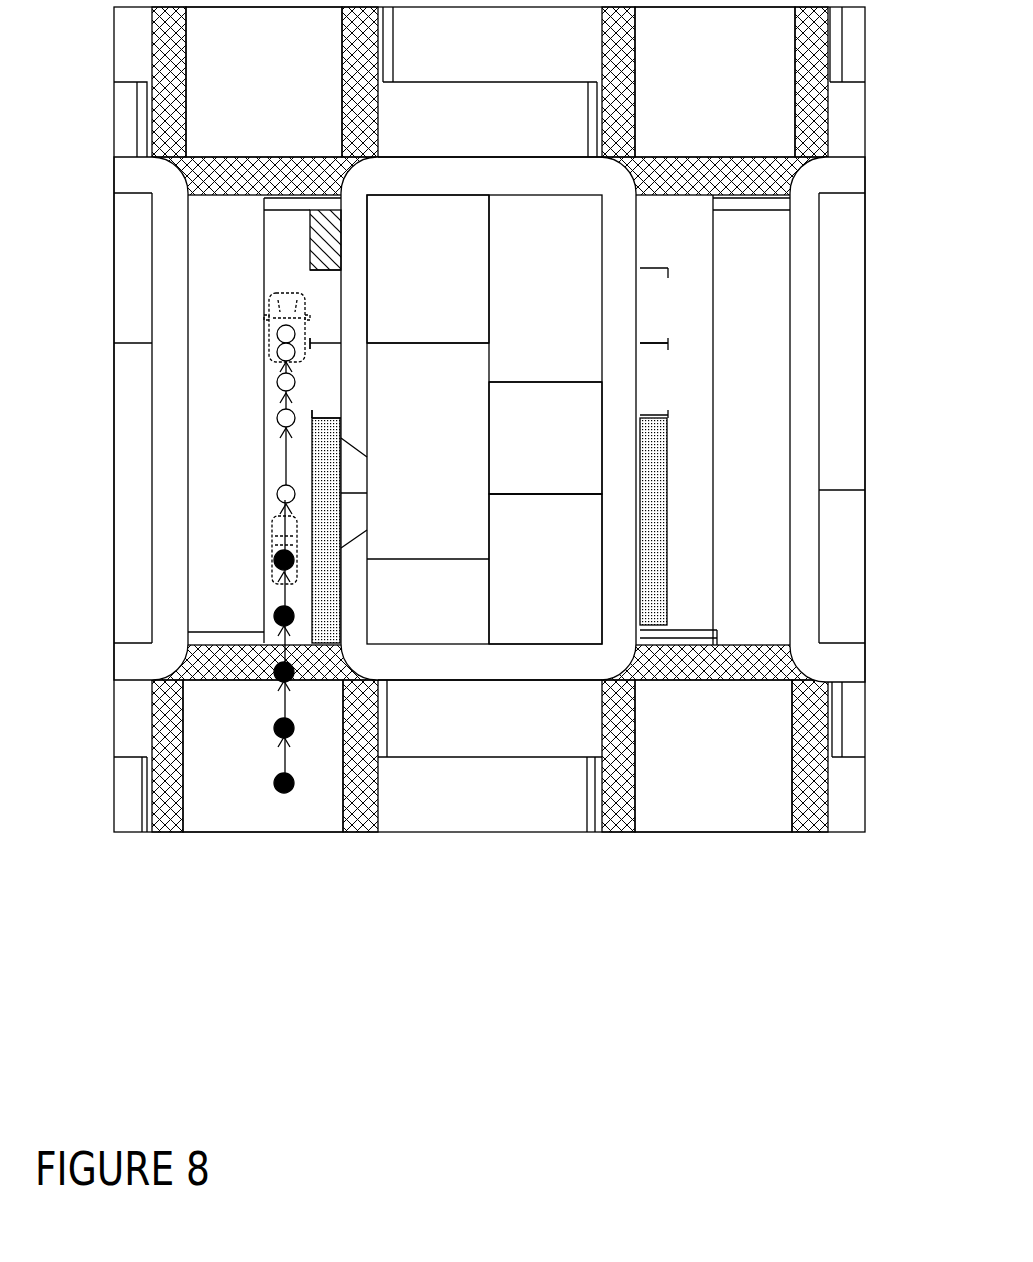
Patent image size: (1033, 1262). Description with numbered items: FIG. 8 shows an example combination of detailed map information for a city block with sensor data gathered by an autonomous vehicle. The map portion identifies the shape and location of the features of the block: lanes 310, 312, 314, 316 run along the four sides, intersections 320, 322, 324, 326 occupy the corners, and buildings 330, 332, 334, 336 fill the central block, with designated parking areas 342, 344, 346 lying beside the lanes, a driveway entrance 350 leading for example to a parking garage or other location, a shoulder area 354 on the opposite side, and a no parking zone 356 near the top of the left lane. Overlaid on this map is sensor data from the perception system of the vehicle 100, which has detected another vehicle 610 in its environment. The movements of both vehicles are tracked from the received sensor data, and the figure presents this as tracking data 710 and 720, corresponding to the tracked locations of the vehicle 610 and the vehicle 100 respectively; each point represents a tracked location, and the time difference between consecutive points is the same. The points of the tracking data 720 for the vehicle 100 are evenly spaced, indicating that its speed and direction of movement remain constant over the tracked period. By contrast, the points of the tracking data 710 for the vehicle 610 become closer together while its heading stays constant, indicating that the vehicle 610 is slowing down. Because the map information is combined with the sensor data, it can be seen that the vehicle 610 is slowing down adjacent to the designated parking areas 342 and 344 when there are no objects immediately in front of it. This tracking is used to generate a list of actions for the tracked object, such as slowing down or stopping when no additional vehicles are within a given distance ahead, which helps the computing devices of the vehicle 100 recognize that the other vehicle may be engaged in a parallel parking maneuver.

The vehicle 100 is at (273, 552).
The lane 310 is at (283, 258).
The lane 312 is at (415, 100).
The lane 314 is at (695, 250).
The lane 316 is at (555, 737).
The intersection 320 is at (264, 82).
The intersection 322 is at (715, 82).
The intersection 324 is at (713, 756).
The intersection 326 is at (263, 756).
The building 330 is at (471, 419).
The building 332 is at (428, 269).
The building 334 is at (545, 438).
The building 336 is at (545, 569).
The designated parking area 342 is at (320, 306).
The designated parking area 344 is at (327, 382).
The designated parking area 346 is at (658, 382).
The driveway entrance 350 is at (320, 485).
The shoulder area 354 is at (665, 550).
The no parking zone 356 is at (310, 245).
The vehicle 610 is at (263, 330).
The tracking data 710 is at (267, 387).
The tracking data 720 is at (273, 615).